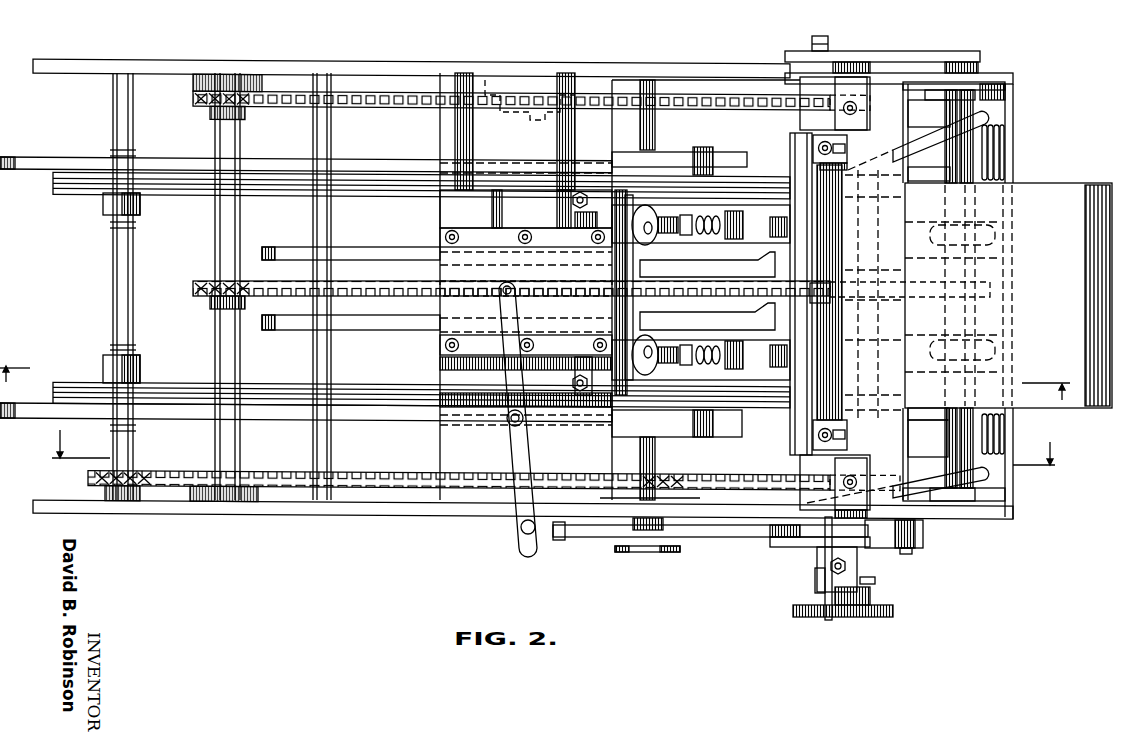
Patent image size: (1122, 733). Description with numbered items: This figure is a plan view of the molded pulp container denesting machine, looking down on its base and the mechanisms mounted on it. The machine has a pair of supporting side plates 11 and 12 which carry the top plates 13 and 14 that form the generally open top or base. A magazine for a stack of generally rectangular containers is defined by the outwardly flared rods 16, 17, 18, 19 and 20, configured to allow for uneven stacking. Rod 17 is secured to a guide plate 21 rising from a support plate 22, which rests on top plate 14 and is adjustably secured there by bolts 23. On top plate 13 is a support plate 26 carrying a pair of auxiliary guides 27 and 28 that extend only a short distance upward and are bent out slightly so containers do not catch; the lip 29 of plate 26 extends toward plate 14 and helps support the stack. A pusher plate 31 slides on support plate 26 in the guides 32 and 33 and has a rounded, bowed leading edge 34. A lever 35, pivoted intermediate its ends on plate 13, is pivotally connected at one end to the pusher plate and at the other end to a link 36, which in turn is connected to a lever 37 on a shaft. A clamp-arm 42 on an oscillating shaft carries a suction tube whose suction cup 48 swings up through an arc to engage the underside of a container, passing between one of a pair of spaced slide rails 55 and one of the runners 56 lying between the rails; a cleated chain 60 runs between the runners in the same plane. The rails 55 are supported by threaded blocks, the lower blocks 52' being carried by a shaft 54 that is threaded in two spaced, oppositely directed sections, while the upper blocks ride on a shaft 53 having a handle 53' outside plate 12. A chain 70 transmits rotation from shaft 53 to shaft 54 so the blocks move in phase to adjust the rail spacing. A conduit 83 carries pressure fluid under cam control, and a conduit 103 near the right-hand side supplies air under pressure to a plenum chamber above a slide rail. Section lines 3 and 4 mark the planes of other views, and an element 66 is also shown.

The section line 3- 3 is at (535, 386).
The section line 4- 4 is at (554, 448).
The supporting side plate 11 is at (384, 62).
The supporting side plate 12 is at (327, 513).
The top plate 13 is at (446, 82).
The top plate 14 is at (812, 92).
The outwardly flared rod 16 is at (705, 150).
The outwardly flared rod 17 is at (838, 284).
The outwardly flared rod 18 is at (710, 435).
The outwardly flared rod 19 is at (578, 368).
The outwardly flared rod 20 is at (593, 210).
The guide plate 21 is at (800, 152).
The support plate 22 is at (900, 216).
The bolt 23 is at (826, 141).
The support plate 26 is at (476, 220).
The auxiliary guide 27 is at (648, 376).
The auxiliary guide 28 is at (650, 217).
The lip 29 is at (642, 246).
The pusher plate 31 is at (450, 270).
The guide 32 is at (540, 233).
The guide 33 is at (473, 352).
The leading edge 34 is at (620, 280).
The lever 35 is at (518, 451).
The link 36 is at (607, 538).
The lever 37 is at (920, 533).
The clamp-arm 42 is at (767, 228).
The suction cup 48 is at (698, 224).
The lower block 52' is at (140, 288).
The shaft 53 is at (633, 468).
The handle 53' is at (647, 565).
The shaft 54 is at (133, 301).
The slide rail 55 is at (690, 190).
The runner 56 is at (704, 268).
The chain 60 is at (352, 286).
The block 66 is at (876, 581).
The chain 70 is at (362, 470).
The conduit 83 is at (630, 497).
The conduit 103 is at (936, 135).